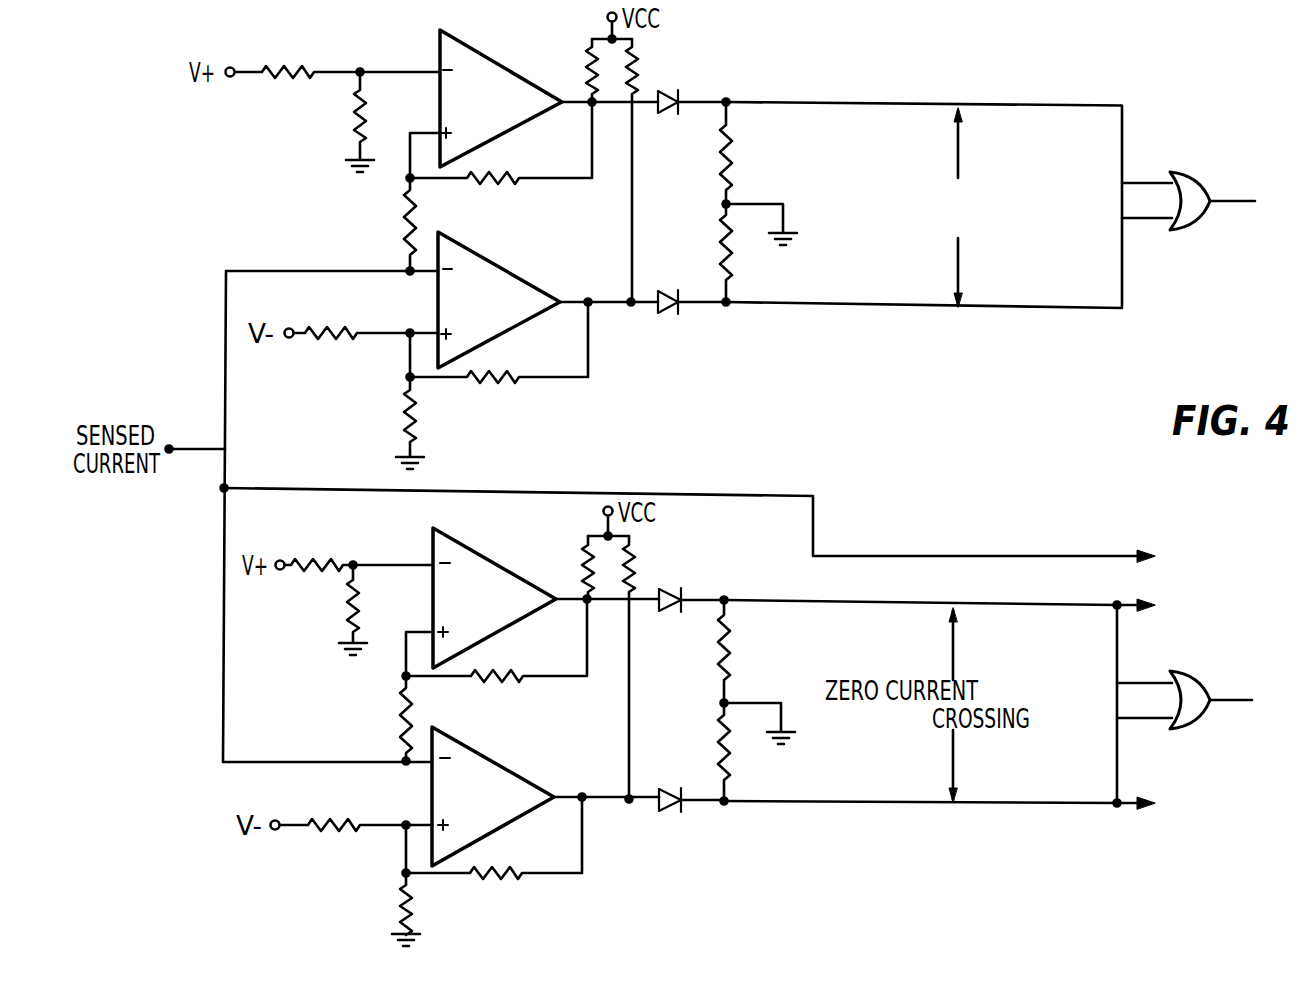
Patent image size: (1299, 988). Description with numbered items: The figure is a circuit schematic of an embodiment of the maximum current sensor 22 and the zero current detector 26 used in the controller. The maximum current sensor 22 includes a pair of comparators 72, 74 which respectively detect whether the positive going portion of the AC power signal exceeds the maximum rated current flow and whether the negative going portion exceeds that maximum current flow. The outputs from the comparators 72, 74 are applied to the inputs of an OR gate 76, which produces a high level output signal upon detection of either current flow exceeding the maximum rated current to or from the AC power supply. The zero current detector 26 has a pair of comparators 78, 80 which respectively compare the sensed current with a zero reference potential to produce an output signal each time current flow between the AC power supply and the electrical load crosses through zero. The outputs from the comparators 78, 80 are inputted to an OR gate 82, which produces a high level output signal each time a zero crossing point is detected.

The maximum current sensor 22 is at (941, 309).
The zero current detector 26 is at (1061, 548).
The comparator 72 is at (430, 62).
The comparator 74 is at (509, 271).
The OR gate 76 is at (1207, 186).
The comparator 78 is at (484, 568).
The comparator 80 is at (494, 769).
The OR gate 82 is at (1209, 676).